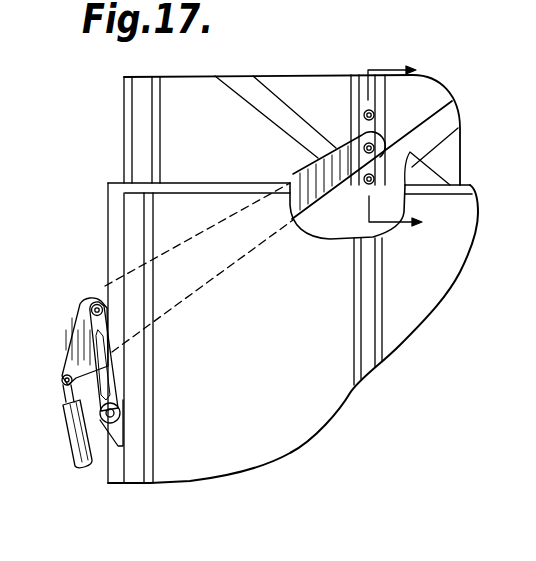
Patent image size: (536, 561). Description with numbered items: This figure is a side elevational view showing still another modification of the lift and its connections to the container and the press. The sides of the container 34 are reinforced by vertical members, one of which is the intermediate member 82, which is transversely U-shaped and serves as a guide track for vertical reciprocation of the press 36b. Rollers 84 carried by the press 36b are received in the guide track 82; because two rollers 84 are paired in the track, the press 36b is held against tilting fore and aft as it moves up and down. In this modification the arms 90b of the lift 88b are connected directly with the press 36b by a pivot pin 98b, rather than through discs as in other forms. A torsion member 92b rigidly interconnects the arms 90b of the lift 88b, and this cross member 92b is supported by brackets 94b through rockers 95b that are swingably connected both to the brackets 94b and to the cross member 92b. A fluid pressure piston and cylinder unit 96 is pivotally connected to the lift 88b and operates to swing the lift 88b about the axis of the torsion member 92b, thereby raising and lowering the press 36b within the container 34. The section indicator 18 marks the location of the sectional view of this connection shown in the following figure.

The section line for FIG. 18 is at (420, 141).
The container 34 is at (352, 411).
The press 36b is at (124, 128).
The intermediate member 82 is at (367, 281).
The rollers 84 is at (363, 113).
The lift 88b is at (63, 331).
The arms 90b is at (308, 182).
The torsion member 92b is at (94, 305).
The brackets 94b is at (118, 430).
The rockers 95b is at (115, 366).
The fluid pressure piston and cylinder unit 96 is at (63, 421).
The pivot pin 98b is at (383, 142).